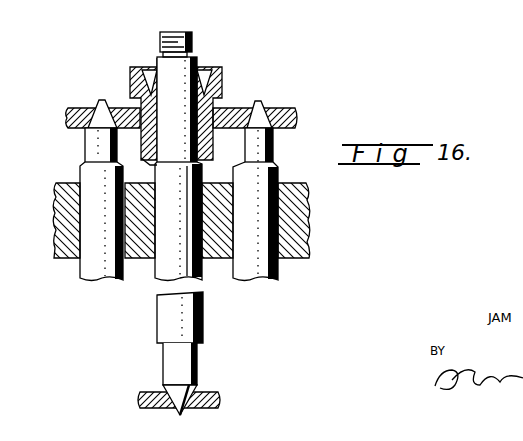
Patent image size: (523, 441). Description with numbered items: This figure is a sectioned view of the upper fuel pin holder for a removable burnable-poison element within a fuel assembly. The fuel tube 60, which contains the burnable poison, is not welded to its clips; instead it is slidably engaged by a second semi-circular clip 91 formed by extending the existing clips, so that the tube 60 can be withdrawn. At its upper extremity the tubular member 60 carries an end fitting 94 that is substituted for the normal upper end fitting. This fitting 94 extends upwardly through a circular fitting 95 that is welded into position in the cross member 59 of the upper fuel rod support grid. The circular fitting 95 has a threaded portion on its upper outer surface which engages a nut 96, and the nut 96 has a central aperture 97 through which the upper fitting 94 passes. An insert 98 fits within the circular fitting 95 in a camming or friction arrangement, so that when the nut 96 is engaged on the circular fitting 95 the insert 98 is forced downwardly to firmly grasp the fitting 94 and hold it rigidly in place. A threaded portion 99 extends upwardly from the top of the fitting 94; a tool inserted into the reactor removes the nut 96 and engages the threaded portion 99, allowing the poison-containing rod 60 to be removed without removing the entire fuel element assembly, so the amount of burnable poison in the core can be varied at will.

The cross member 59 is at (275, 110).
The fuel tube 60 is at (53, 242).
The second semi-circular clip 91 is at (283, 188).
The end fitting 94 is at (198, 60).
The circular fitting 95 is at (150, 152).
The nut 96 is at (222, 81).
The central aperture 97 is at (154, 67).
The insert 98 is at (134, 67).
The threaded portion 99 is at (190, 36).